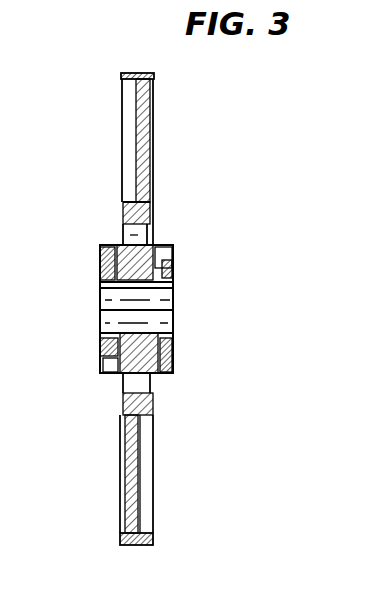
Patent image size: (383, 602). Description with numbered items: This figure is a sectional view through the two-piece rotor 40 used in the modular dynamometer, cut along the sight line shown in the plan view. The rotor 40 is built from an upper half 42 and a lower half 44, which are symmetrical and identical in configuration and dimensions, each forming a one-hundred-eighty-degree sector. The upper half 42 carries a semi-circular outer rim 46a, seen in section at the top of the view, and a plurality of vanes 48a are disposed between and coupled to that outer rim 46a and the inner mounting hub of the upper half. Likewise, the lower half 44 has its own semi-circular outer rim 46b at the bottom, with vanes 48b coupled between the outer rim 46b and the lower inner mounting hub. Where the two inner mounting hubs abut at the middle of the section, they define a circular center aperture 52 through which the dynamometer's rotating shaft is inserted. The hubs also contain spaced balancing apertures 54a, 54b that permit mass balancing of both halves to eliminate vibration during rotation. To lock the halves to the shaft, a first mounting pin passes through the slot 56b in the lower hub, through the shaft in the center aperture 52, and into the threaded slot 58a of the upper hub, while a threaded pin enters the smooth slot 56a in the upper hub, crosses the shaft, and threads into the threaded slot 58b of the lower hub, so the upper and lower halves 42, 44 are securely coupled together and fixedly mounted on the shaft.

The rotor 40 is at (88, 442).
The upper half 42 is at (147, 140).
The lower half 44 is at (138, 470).
The outer rim 46a is at (134, 73).
The outer rim 46b is at (135, 546).
The vanes 48a is at (150, 128).
The vanes 48b is at (153, 463).
The center aperture 52 is at (138, 305).
The balancing apertures 54a is at (122, 232).
The balancing apertures 54b is at (122, 385).
The smooth slot 56a is at (173, 266).
The slot 56b is at (100, 352).
The threaded slot 58a is at (100, 265).
The threaded slot 58b is at (173, 352).